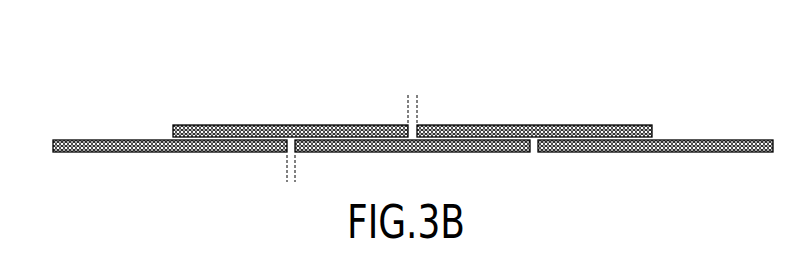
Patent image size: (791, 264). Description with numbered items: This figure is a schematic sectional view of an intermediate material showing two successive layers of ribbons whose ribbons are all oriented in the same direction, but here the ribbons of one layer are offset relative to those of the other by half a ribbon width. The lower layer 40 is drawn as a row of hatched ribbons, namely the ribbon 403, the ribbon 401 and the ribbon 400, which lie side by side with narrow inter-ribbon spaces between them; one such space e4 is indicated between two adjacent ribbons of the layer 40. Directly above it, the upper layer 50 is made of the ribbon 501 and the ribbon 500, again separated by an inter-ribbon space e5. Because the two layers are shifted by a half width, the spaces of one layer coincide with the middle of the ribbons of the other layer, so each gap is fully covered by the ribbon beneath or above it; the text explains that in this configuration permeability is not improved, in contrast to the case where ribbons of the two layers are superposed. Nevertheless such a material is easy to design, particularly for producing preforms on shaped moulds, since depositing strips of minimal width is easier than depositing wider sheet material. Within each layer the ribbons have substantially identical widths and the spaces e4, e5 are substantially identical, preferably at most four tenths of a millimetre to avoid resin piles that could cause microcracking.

The layer 50 is at (288, 83).
The ribbon 501 is at (323, 125).
The ribbon 500 is at (490, 125).
The layer 40 is at (476, 195).
The ribbon 403 is at (108, 152).
The ribbon 401 is at (500, 152).
The ribbon 400 is at (695, 152).
The space e4 is at (310, 177).
The space e5 is at (431, 100).